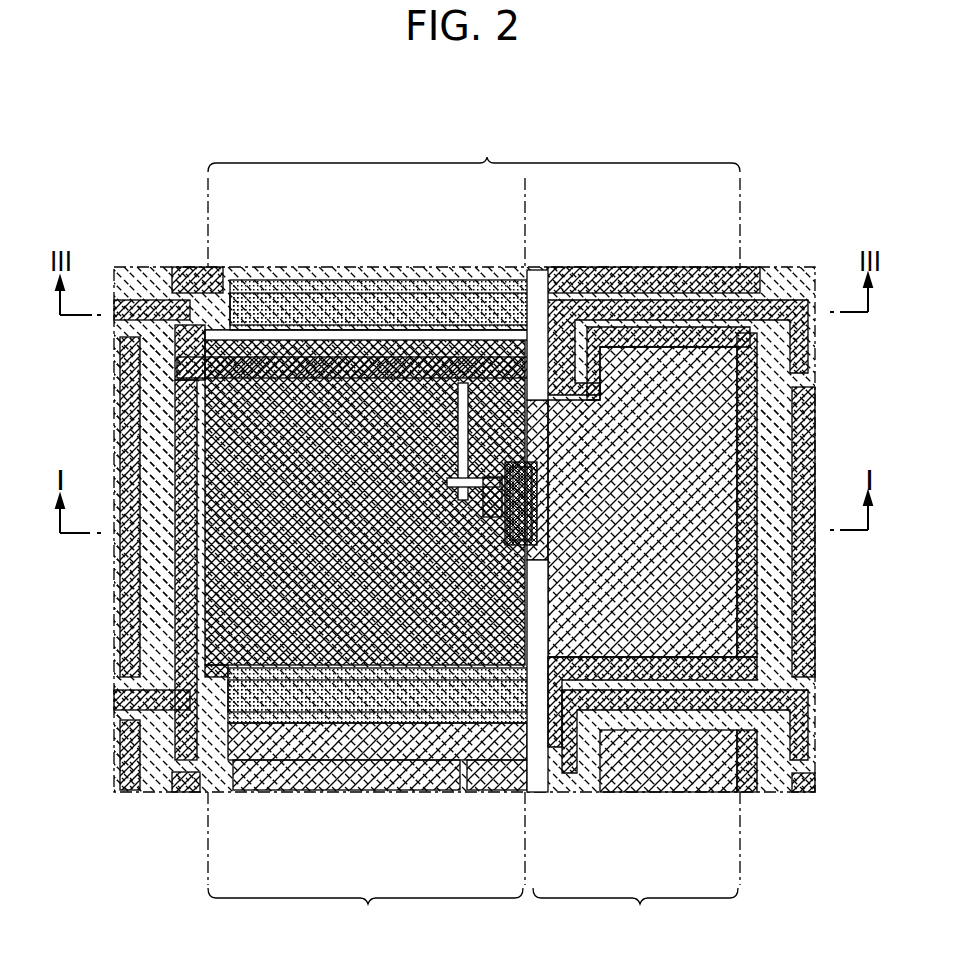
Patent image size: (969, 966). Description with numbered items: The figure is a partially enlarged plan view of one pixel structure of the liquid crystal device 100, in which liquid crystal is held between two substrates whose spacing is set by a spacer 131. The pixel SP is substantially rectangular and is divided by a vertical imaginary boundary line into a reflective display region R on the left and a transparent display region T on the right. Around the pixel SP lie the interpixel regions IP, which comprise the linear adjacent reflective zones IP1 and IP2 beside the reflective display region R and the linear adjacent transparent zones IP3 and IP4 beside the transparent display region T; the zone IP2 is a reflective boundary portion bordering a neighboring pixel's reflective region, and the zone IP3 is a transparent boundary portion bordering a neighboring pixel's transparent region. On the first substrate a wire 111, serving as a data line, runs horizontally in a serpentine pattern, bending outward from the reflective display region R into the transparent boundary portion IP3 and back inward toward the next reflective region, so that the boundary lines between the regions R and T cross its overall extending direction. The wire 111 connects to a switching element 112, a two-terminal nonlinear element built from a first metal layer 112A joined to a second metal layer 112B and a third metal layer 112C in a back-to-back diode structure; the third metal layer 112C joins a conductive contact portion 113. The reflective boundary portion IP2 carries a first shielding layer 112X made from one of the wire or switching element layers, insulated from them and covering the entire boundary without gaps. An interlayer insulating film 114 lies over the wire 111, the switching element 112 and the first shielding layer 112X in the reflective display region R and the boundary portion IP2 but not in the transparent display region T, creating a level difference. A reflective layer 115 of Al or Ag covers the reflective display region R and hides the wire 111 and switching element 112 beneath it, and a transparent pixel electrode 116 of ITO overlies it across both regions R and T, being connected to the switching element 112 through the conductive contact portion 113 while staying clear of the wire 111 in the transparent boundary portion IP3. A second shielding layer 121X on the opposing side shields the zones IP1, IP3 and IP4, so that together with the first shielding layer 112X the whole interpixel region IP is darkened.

The liquid crystal device 100 is at (370, 112).
The wire 111 is at (600, 303).
The switching element 112 is at (488, 432).
The first shielding layer 112X is at (285, 290).
The first metal layer 112A is at (297, 700).
The second metal layer 112B is at (462, 392).
The third metal layer 112C is at (467, 483).
The conductive contact portion 113 is at (617, 713).
The interlayer insulating film 114 is at (572, 683).
The reflective layer 115 is at (527, 425).
The pixel electrode 116 is at (713, 670).
The second shielding layer 121X is at (527, 737).
The spacer 131 is at (372, 320).
The interpixel region IP is at (753, 258).
The adjacent reflective zone IP1 is at (115, 427).
The reflective boundary portion IP2 is at (253, 272).
The transparent boundary portion IP3 is at (663, 275).
The adjacent transparent zone IP4 is at (780, 583).
The pixel SP is at (474, 149).
The reflective display region R is at (365, 910).
The transparent display region T is at (635, 910).